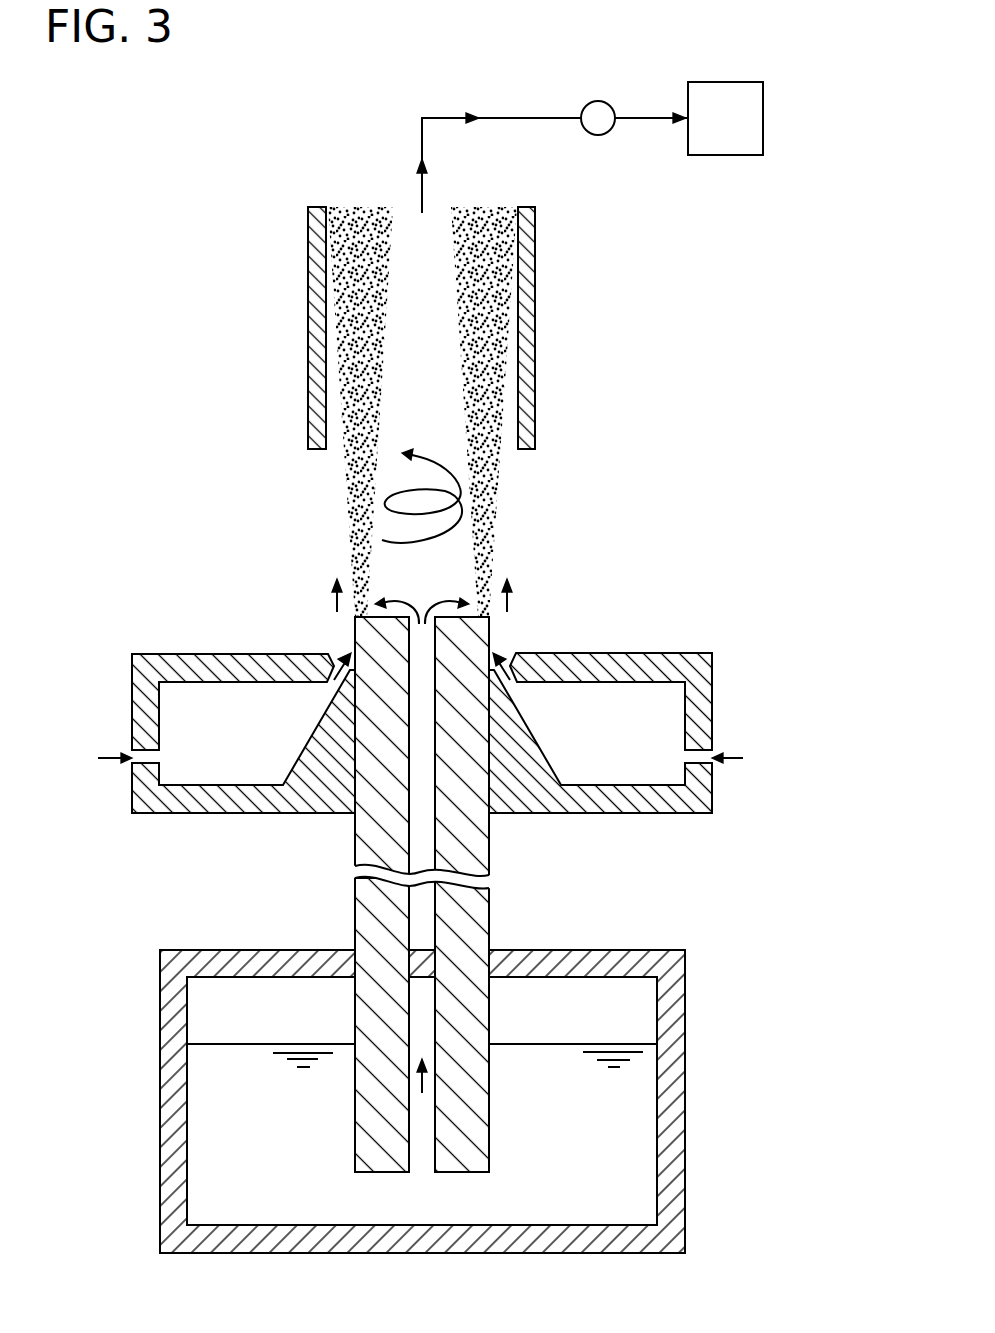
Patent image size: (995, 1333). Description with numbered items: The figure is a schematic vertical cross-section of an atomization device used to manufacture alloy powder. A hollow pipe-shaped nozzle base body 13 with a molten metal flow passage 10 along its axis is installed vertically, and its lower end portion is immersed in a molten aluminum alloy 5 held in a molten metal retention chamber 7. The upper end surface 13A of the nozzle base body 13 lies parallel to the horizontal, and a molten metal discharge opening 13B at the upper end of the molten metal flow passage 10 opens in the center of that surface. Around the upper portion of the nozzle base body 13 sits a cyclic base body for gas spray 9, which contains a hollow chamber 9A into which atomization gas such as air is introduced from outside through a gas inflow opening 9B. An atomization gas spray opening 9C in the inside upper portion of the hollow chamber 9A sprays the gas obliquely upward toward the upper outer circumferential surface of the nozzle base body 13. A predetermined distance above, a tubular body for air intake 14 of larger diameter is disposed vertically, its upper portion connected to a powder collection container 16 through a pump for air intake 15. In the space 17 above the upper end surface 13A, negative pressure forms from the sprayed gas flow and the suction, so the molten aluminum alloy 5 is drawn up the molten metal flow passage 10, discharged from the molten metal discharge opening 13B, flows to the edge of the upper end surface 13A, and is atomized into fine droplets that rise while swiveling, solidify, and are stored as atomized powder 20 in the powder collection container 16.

The molten aluminum alloy 5 is at (642, 1157).
The molten metal retention chamber 7 is at (627, 950).
The base body for gas spray 9 is at (627, 653).
The hollow chamber 9A is at (662, 712).
The gas inflow opening 9B is at (148, 758).
The atomization gas spray opening 9C is at (321, 672).
The molten metal flow passage 10 is at (460, 917).
The nozzle base body 13 is at (422, 843).
The upper end surface 13A is at (484, 606).
The molten metal discharge opening 13B is at (423, 622).
The tubular body for air intake 14 is at (526, 300).
The pump for air intake 15 is at (600, 101).
The powder collection container 16 is at (728, 82).
The space 17 is at (396, 574).
The atomized powder 20 is at (490, 355).